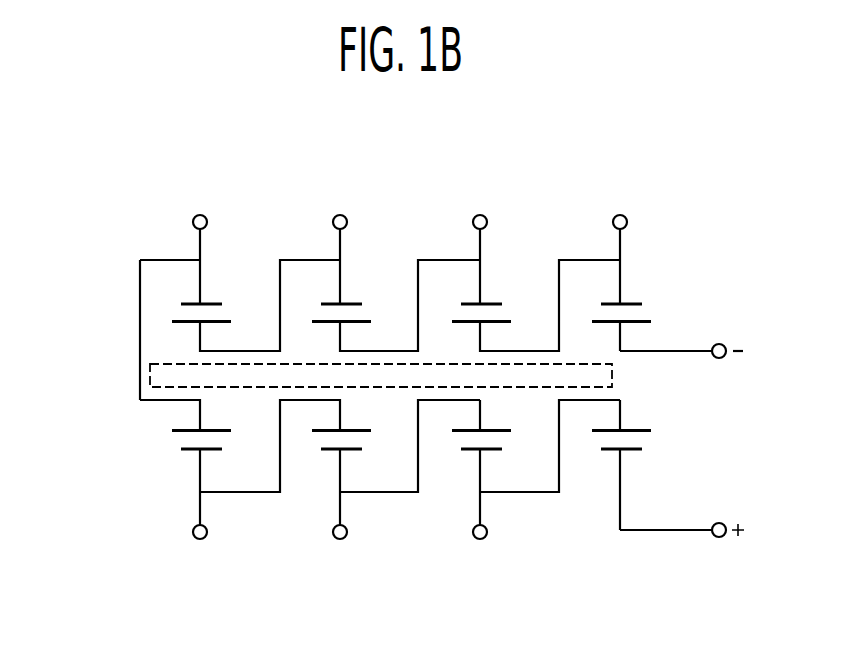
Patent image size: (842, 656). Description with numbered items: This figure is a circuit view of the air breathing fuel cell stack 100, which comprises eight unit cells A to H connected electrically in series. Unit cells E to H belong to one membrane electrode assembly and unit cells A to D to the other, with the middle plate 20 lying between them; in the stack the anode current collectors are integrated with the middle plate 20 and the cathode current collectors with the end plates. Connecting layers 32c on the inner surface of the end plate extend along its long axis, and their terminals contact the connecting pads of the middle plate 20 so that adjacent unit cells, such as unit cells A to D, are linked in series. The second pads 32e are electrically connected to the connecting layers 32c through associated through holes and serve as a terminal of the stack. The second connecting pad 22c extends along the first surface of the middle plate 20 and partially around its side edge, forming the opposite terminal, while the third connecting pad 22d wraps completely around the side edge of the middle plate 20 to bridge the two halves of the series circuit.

The air breathing fuel cell stack 100 is at (668, 202).
The third connecting pad 22d is at (140, 340).
The second connecting pad 22c is at (688, 350).
The middle plate 20 is at (612, 375).
The connecting layers 32c is at (382, 494).
The second pads 32e is at (719, 538).